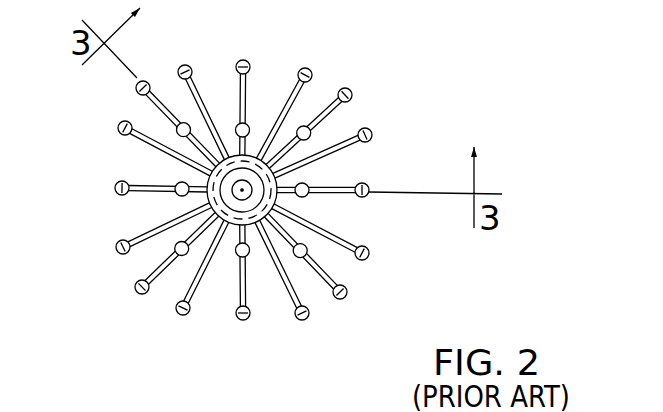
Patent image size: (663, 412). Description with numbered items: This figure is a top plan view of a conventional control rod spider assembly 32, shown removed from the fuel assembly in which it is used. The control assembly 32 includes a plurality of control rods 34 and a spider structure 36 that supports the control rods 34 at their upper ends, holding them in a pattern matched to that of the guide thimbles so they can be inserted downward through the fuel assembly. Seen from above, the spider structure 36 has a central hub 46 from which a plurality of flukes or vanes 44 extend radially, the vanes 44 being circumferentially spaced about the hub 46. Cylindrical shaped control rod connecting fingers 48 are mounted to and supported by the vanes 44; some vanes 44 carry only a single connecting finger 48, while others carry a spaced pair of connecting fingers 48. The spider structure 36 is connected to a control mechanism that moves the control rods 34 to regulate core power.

The control rod spider assembly 32 is at (422, 123).
The control rods 34 is at (302, 70).
The spider structure 36 is at (212, 265).
The vanes 44 is at (327, 121).
The central hub 46 is at (218, 183).
The control rod connecting fingers 48 is at (368, 182).